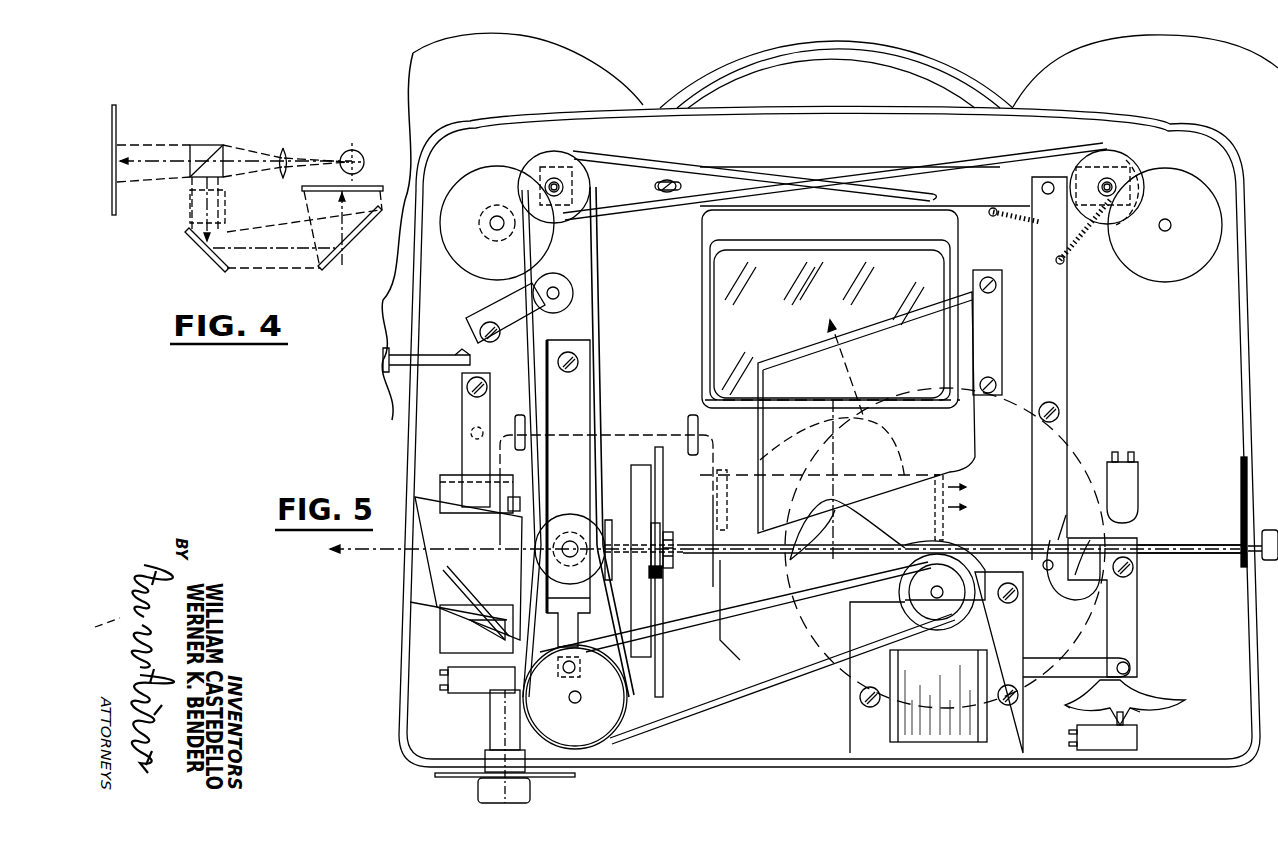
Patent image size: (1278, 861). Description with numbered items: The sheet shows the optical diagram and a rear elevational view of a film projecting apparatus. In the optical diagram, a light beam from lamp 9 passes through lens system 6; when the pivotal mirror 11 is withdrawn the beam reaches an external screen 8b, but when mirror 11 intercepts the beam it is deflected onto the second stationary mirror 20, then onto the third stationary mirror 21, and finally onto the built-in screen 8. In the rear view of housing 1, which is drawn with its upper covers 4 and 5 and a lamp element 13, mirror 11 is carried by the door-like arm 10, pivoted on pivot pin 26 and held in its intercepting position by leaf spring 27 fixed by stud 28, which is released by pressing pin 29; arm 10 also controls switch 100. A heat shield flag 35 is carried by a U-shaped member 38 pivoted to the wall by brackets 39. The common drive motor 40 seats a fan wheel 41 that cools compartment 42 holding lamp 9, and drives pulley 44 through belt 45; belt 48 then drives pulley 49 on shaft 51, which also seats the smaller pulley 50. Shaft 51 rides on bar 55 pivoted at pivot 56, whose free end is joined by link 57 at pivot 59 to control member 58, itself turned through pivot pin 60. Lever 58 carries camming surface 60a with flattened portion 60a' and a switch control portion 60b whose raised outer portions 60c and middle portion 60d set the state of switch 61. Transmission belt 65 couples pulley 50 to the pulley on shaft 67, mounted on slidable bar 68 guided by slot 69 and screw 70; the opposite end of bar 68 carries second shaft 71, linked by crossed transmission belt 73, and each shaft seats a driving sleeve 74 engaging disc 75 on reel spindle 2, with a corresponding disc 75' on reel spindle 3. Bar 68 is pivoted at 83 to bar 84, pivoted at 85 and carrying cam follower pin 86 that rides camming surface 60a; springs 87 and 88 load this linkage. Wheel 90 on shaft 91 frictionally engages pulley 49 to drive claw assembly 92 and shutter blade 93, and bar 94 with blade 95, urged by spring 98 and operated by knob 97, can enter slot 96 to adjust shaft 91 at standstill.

In FIG. 5, the housing 1 is at (1247, 366).
In FIG. 5, the reel spindle 2 is at (495, 230).
In FIG. 5, the reel spindle 3 is at (1162, 233).
In FIG. 5, the lid 4 is at (594, 68).
In FIG. 5, the cover 5 is at (1077, 64).
In FIG. 4, the lens system 6 is at (285, 150).
In FIG. 4, the built-in screen 8 is at (370, 186).
In FIG. 5, the built-in screen 8 is at (718, 273).
In FIG. 4, the external screen 8b is at (118, 124).
In FIG. 4, the lamp 9 is at (357, 152).
In FIG. 5, the lamp 9 is at (896, 429).
In FIG. 5, the arm or plate 10 is at (440, 484).
In FIG. 4, the mirror 11 is at (203, 146).
In FIG. 5, the mirror 11 is at (500, 632).
In FIG. 5, the lamp 13 is at (1130, 480).
In FIG. 4, the second stationary mirror 20 is at (198, 265).
In FIG. 5, the second stationary mirror 20 is at (432, 589).
In FIG. 4, the third stationary mirror 21 is at (345, 243).
In FIG. 5, the third stationary mirror 21 is at (970, 430).
In FIG. 5, the pivot pin 26 is at (520, 502).
In FIG. 5, the leaf spring 27 is at (465, 409).
In FIG. 5, the stud 28 is at (465, 381).
In FIG. 5, the pin 29 is at (470, 438).
In FIG. 5, the flag 35 is at (712, 565).
In FIG. 5, the U-shaped member 38 is at (615, 436).
In FIG. 5, the brackets 39 is at (515, 420).
In FIG. 5, the drive motor 40 is at (873, 712).
In FIG. 5, the fan wheel 41 is at (860, 522).
In FIG. 5, the compartment 42 is at (950, 530).
In FIG. 5, the pulley 44 is at (626, 706).
In FIG. 5, the belt 45 is at (700, 712).
In FIG. 5, the belt 48 is at (545, 648).
In FIG. 5, the pulley 49 is at (613, 522).
In FIG. 5, the pulley 50 is at (585, 512).
In FIG. 5, the shaft 51 is at (568, 606).
In FIG. 5, the bar 55 is at (580, 406).
In FIG. 5, the pivot 56 is at (578, 364).
In FIG. 5, the link 57 is at (770, 656).
In FIG. 5, the control member 58 is at (1128, 632).
In FIG. 5, the pivot 59 is at (1130, 666).
In FIG. 5, the pivot pin 60 is at (1134, 571).
In FIG. 5, the camming surface 60a is at (1073, 588).
In FIG. 5, the flattened portion 60a' is at (1082, 526).
In FIG. 5, the switch control portion 60b is at (1137, 696).
In FIG. 5, the raised outer portions 60c is at (1180, 703).
In FIG. 5, the middle portion 60d is at (1150, 712).
In FIG. 5, the switch 61 is at (1098, 747).
In FIG. 5, the transmission belt 65 is at (598, 249).
In FIG. 5, the shaft 67 is at (565, 186).
In FIG. 5, the bar 68 is at (836, 175).
In FIG. 5, the slot 69 is at (685, 183).
In FIG. 5, the screw 70 is at (664, 181).
In FIG. 5, the second shaft 71 is at (1116, 179).
In FIG. 5, the crossed transmission belt 73 is at (766, 177).
In FIG. 5, the driving sleeve 74 is at (554, 176).
In FIG. 5, the disc 75 is at (497, 213).
In FIG. 5, the take-up reel 75' is at (1190, 225).
In FIG. 5, the pivot 83 is at (1047, 181).
In FIG. 5, the bar 84 is at (1060, 350).
In FIG. 5, the pivot 85 is at (1058, 406).
In FIG. 5, the cam follower pin 86 is at (1047, 573).
In FIG. 5, the spring 87 is at (1015, 224).
In FIG. 5, the spring 88 is at (1089, 247).
In FIG. 5, the wheel 90 is at (567, 505).
In FIG. 5, the shaft 91 is at (615, 545).
In FIG. 5, the claw assembly 92 is at (650, 470).
In FIG. 5, the shutter blade 93 is at (660, 446).
In FIG. 5, the bar 94 is at (1172, 544).
In FIG. 5, the blade 95 is at (683, 565).
In FIG. 5, the slot 96 is at (675, 532).
In FIG. 5, the knob 97 is at (1268, 528).
In FIG. 5, the spring 98 is at (1240, 527).
In FIG. 5, the switch 100 is at (468, 691).